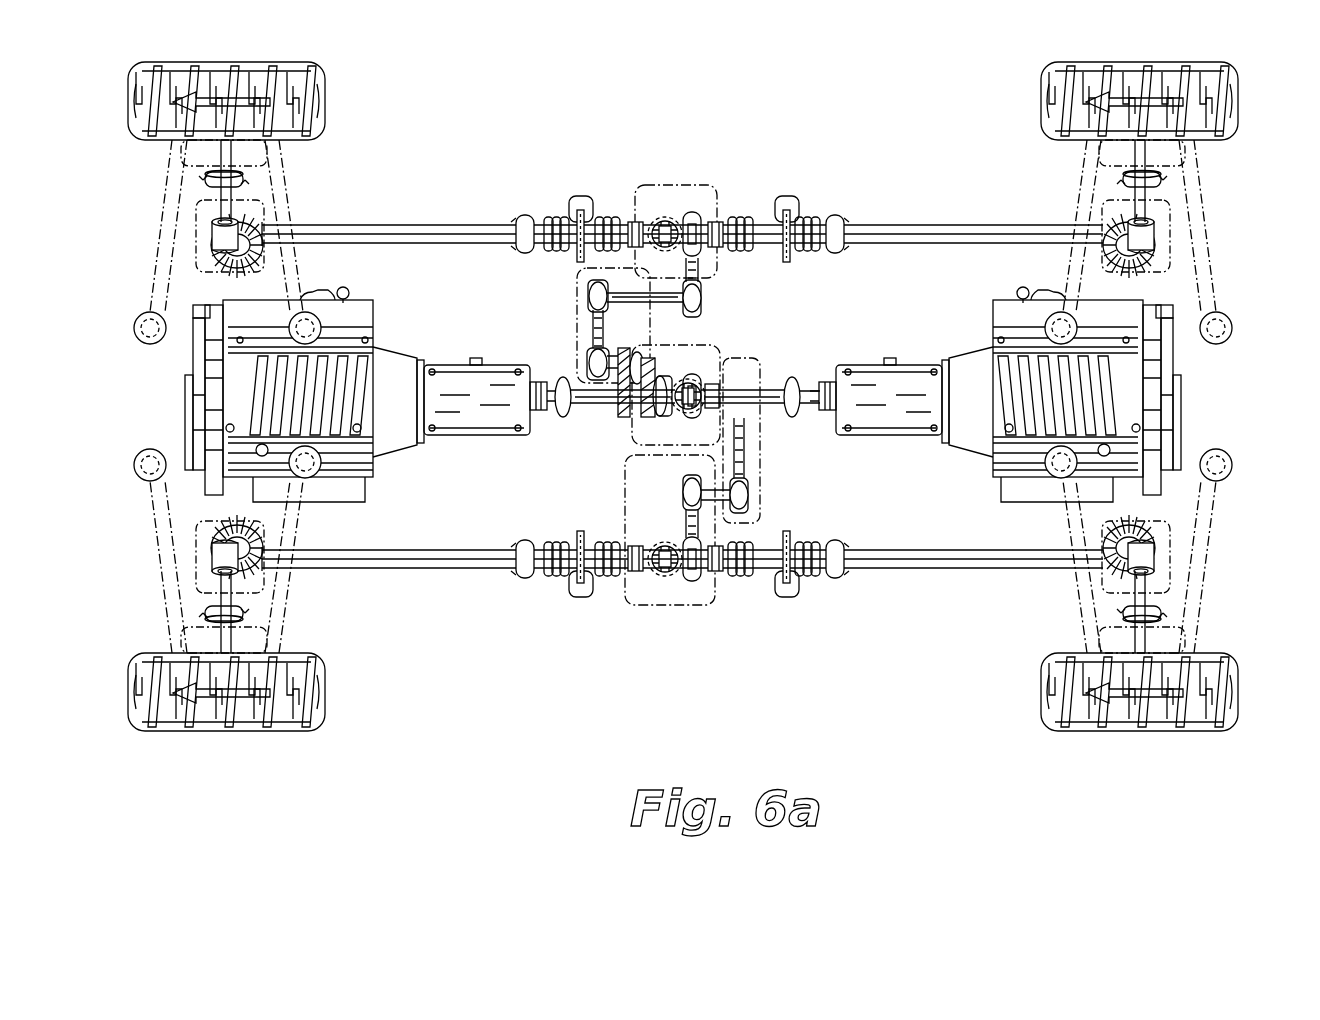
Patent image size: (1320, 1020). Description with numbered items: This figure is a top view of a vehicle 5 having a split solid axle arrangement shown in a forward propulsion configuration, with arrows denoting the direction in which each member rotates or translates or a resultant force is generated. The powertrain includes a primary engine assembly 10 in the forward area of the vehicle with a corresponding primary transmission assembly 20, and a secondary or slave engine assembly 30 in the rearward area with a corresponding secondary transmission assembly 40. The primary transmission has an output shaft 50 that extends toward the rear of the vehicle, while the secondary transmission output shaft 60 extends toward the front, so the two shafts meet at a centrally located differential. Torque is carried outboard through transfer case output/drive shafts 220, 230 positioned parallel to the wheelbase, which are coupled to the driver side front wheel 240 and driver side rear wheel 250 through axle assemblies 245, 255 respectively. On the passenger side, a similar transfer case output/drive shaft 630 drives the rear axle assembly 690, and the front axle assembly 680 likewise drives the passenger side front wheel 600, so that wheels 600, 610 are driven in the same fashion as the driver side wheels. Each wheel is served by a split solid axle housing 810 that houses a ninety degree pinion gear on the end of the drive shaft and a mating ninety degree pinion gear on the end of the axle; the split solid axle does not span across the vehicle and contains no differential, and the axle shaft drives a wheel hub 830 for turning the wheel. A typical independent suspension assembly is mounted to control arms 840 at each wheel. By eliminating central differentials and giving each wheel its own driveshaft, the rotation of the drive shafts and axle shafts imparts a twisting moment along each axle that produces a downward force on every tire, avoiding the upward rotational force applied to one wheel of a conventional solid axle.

The vehicle 5 is at (950, 70).
The primary engine assembly 10 is at (318, 290).
The primary transmission assembly 20 is at (430, 356).
The secondary engine assembly 30 is at (1008, 290).
The secondary transmission assembly 40 is at (880, 348).
The transmission output shaft 50 is at (540, 420).
The transmission output shaft 60 is at (815, 388).
The transfer case output/drive shaft 220 is at (412, 570).
The transfer case output/drive shaft 230 is at (938, 570).
The driver side front wheel 240 is at (325, 692).
The front driver side axle assembly 245 is at (205, 565).
The driver side rear wheel 250 is at (1240, 688).
The rear driver side axle assembly 255 is at (1162, 538).
The passenger side front wheel 600 is at (325, 98).
The passenger side rear wheel 610 is at (1240, 103).
The transfer case output/drive shaft 630 is at (922, 225).
The front axle assembly 680 is at (200, 212).
The rear axle assembly 690 is at (1133, 265).
The split solid axle housing 810 is at (200, 235).
The wheel hub 830 is at (265, 152).
The control arms 840 is at (290, 195).